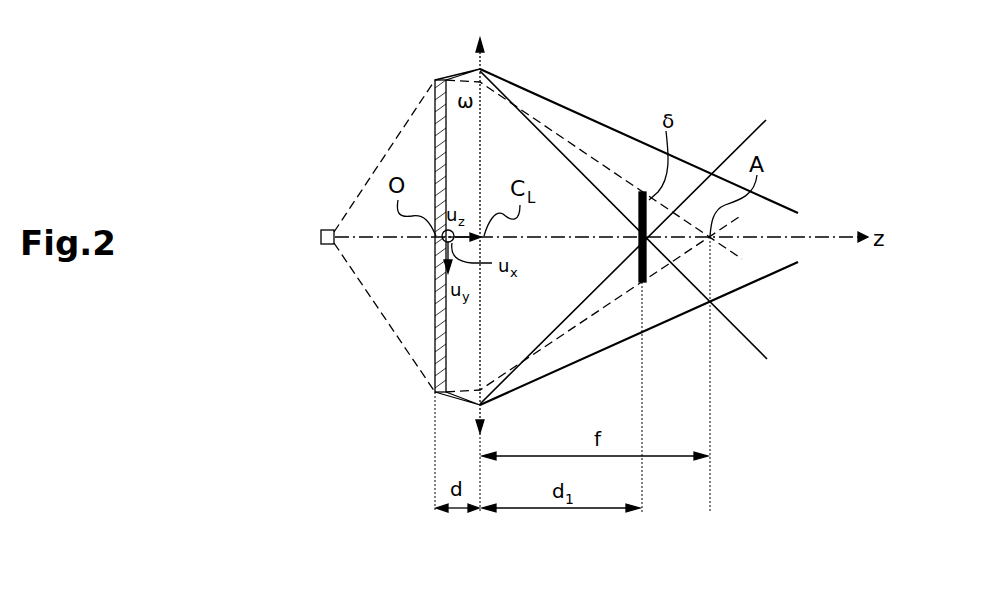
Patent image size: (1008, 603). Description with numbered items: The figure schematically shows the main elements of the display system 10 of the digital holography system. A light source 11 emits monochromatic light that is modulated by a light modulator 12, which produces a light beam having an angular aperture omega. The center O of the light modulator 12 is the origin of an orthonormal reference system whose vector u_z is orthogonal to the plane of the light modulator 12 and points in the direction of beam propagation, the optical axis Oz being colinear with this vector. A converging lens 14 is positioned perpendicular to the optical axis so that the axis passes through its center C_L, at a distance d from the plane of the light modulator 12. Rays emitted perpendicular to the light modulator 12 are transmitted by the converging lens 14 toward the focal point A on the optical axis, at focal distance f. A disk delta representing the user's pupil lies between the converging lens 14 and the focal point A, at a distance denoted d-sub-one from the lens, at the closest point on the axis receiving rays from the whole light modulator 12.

The display system 10 is at (404, 436).
The light source 11 is at (329, 229).
The light modulator 12 is at (437, 78).
The converging lens 14 is at (483, 70).